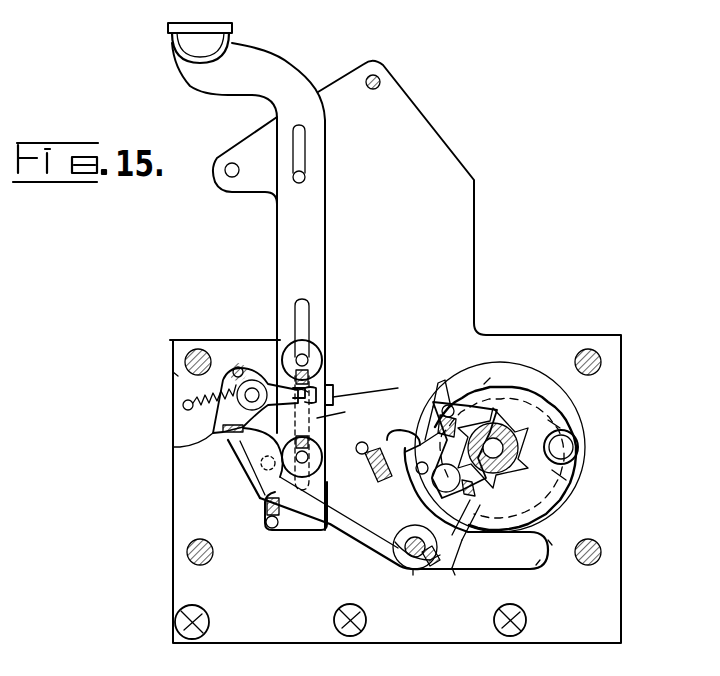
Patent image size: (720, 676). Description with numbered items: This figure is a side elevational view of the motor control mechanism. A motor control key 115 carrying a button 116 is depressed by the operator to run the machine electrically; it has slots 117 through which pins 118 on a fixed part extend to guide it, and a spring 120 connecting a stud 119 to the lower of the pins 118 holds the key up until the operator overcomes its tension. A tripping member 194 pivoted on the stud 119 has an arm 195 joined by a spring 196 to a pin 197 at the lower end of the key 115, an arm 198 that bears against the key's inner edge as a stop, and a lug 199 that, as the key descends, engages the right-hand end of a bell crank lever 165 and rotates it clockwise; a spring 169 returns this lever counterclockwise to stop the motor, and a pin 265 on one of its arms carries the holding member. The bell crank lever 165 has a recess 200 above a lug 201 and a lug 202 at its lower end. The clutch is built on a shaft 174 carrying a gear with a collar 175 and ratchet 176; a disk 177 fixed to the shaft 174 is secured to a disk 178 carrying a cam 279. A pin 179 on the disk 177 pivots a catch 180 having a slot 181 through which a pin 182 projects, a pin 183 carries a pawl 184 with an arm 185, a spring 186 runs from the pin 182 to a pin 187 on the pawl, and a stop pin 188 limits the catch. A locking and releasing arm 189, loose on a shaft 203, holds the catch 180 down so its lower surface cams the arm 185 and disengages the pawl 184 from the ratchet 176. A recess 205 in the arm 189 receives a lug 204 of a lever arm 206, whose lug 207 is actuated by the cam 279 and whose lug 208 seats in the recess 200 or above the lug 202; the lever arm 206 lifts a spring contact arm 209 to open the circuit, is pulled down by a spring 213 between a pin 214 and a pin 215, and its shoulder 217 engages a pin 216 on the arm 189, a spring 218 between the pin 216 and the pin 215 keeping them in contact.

The motor control key 115 is at (282, 64).
The button 116 is at (218, 32).
The slots 117 is at (306, 143).
The pins 118 is at (305, 177).
The stud 119 is at (306, 460).
The spring 120 is at (320, 392).
The bell crank lever 165 is at (212, 435).
The spring 169 is at (222, 392).
The shaft 174 is at (560, 470).
The collar 175 is at (518, 415).
The ratchet 176 is at (562, 421).
The disk 177 is at (515, 378).
The disk 178 is at (576, 444).
The pin 179 is at (622, 440).
The catch 180 is at (487, 386).
The slot 181 is at (440, 420).
The pin 182 is at (448, 403).
The pin 183 is at (450, 493).
The pawl 184 is at (478, 490).
The arm 185 is at (396, 441).
The spring 186 is at (478, 545).
The pin 187 is at (468, 560).
The stop pin 188 is at (406, 478).
The locking and releasing arm 189 is at (360, 500).
The tripping member 194 is at (318, 418).
The arm 195 is at (265, 458).
The spring 196 is at (293, 531).
The pin 197 is at (271, 529).
The arm 198 is at (335, 397).
The lug 199 is at (296, 386).
The recess 200 is at (228, 440).
The lug 201 is at (230, 447).
The lug 202 is at (268, 522).
The shaft 203 is at (402, 560).
The lug 204 is at (433, 570).
The recess 205 is at (415, 576).
The lever arm 206 is at (398, 548).
The lug 207 is at (552, 540).
The lug 208 is at (222, 430).
The spring contact arm 209 is at (185, 407).
The spring 213 is at (346, 441).
The pin 214 is at (364, 452).
The pin 215 is at (455, 576).
The pin 216 is at (338, 614).
The shoulder 217 is at (415, 545).
The spring 218 is at (428, 562).
The pin 265 is at (240, 364).
The cam 279 is at (538, 562).